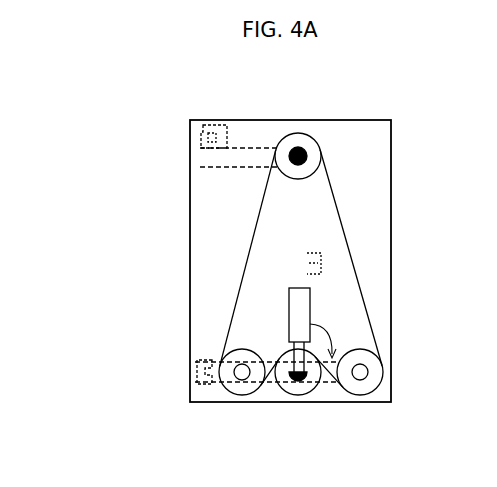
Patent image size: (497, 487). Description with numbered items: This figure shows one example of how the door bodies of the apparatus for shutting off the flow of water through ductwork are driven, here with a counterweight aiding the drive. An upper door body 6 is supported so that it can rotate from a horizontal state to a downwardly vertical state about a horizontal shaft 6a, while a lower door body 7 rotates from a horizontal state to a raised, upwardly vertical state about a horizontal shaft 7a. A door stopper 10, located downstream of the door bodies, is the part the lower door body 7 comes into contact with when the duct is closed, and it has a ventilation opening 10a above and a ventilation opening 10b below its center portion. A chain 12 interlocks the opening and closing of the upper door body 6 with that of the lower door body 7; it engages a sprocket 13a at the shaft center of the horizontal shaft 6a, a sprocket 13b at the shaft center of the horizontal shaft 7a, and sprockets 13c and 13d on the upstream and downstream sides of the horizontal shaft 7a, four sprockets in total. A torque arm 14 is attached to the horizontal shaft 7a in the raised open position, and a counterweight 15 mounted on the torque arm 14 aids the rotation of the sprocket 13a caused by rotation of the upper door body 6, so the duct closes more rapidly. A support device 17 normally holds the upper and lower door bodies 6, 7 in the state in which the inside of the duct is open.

The support device 17 is at (215, 124).
The upper door body 6 is at (248, 146).
The horizontal shaft 6a is at (297, 147).
The sprocket 13a is at (323, 177).
The chain 12 is at (258, 212).
The ventilation opening 10a is at (318, 200).
The door stopper 10 is at (323, 262).
The counterweight 15 is at (288, 303).
The ventilation opening 10b is at (310, 322).
The torque arm 14 is at (291, 343).
The lower door body 7 is at (189, 373).
The sprocket 13c is at (229, 384).
The sprocket 13b is at (283, 386).
The horizontal shaft 7a is at (294, 388).
The sprocket 13d is at (372, 400).